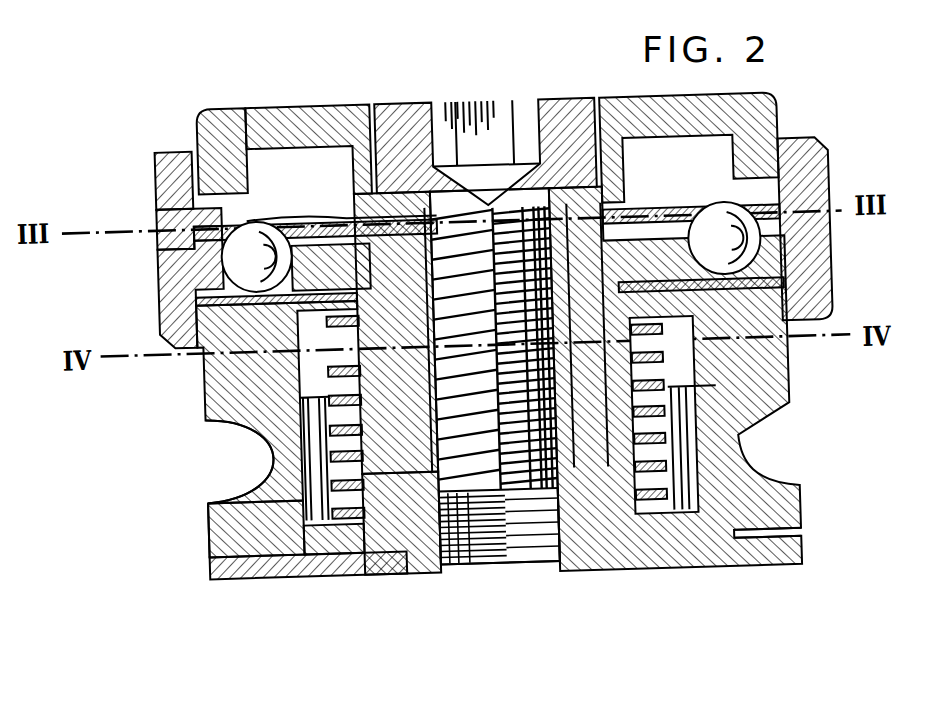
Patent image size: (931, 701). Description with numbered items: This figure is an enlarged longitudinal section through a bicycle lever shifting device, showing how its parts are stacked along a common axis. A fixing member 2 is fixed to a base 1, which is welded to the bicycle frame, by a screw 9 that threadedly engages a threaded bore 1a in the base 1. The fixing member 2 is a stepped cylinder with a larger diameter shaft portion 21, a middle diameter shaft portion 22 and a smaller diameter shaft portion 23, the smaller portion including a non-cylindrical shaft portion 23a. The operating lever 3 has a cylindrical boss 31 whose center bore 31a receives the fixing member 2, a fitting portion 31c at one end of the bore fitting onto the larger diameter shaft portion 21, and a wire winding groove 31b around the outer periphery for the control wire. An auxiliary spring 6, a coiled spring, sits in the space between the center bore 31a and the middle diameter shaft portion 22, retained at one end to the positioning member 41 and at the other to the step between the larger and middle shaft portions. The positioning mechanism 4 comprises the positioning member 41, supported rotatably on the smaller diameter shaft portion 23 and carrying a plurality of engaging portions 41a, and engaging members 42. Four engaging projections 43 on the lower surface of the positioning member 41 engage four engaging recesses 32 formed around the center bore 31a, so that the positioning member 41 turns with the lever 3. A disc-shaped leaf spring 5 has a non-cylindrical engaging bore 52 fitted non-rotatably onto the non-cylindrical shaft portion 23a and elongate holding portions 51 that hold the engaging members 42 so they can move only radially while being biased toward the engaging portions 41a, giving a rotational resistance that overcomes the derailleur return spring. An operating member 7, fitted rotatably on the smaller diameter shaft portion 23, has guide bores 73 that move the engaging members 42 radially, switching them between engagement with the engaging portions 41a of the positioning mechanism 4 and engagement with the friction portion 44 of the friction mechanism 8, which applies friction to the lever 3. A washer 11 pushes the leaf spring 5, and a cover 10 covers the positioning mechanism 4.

The base 1 is at (398, 554).
The threaded bore 1a is at (443, 562).
The fixing member 2 is at (296, 554).
The operating lever 3 is at (235, 492).
The positioning mechanism 4 is at (291, 214).
The leaf spring 5 is at (158, 203).
The auxiliary spring 6 is at (248, 408).
The operating member 7 is at (175, 147).
The friction mechanism 8 is at (310, 99).
The screw 9 is at (413, 101).
The cover 10 is at (255, 103).
The washer 11 is at (395, 100).
The larger diameter shaft portion 21 is at (210, 551).
The middle diameter shaft portion 22 is at (607, 436).
The smaller diameter shaft portion 23 is at (298, 379).
The non-cylindrical shaft portion 23a is at (442, 101).
The cylindrical boss 31 is at (211, 522).
The center bore 31a is at (672, 516).
The wire winding groove 31b is at (259, 469).
The fitting portion 31c is at (704, 537).
The engaging recesses 32 is at (259, 366).
The positioning member 41 is at (156, 308).
The engaging portions 41a is at (249, 283).
The engaging members 42 is at (227, 250).
The engaging projections 43 is at (306, 358).
The friction portion 44 is at (310, 217).
The holding portion 51 is at (233, 224).
The engaging bore 52 is at (575, 104).
The guide bore 73 is at (288, 239).